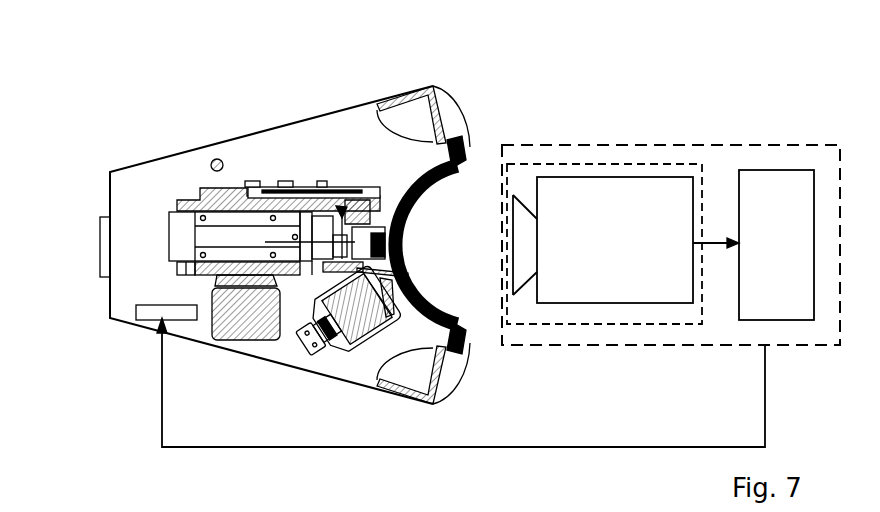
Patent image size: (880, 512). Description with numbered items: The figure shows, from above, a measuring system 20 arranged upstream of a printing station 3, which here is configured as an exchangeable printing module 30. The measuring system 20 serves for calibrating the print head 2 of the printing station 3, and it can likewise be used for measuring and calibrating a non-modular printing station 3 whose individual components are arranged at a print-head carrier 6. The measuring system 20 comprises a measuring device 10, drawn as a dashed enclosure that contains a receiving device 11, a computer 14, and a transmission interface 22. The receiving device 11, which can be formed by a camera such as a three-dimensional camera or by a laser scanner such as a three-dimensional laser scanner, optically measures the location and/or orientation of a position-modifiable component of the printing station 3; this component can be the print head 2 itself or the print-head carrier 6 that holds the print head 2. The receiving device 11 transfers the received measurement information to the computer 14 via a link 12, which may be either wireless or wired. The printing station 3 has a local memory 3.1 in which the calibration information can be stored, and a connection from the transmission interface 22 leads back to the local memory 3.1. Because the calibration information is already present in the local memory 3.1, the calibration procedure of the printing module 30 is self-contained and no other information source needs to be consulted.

The printing station 3 is at (270, 245).
The printing module 30 is at (183, 150).
The local memory 3.1 is at (135, 317).
The print-head carrier 6 is at (332, 187).
The print head 2 is at (381, 227).
The measuring device 10 is at (593, 163).
The receiving device 11 is at (615, 251).
The link 12 is at (708, 238).
The computer 14 is at (789, 256).
The measuring system 20 is at (724, 108).
The transmission interface 22 is at (757, 352).